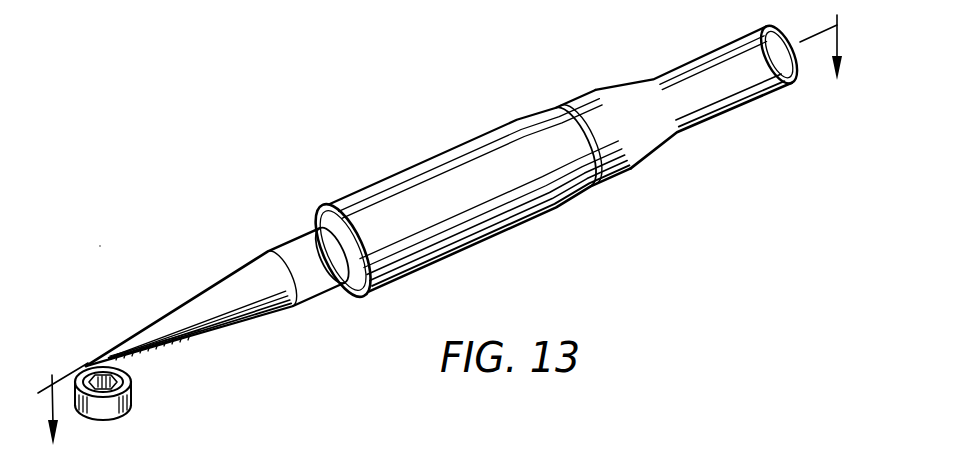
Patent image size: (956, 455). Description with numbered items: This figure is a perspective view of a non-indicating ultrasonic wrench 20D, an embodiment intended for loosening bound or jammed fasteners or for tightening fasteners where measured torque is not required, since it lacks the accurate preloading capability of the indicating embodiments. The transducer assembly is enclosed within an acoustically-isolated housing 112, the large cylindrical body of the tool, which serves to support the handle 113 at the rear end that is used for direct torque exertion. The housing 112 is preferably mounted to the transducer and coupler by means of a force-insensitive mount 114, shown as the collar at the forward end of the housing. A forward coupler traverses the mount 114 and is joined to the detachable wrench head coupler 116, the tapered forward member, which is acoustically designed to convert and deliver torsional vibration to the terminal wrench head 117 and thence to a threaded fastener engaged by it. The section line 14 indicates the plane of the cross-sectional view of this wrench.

The non-indicating ultrasonic wrench 20D is at (302, 176).
The acoustically-isolated housing 112 is at (502, 235).
The handle 113 is at (688, 135).
The force-insensitive mount 114 is at (303, 302).
The detachable wrench head coupler 116 is at (258, 322).
The terminal wrench head 117 is at (128, 410).
The section line 14- 14 is at (443, 230).